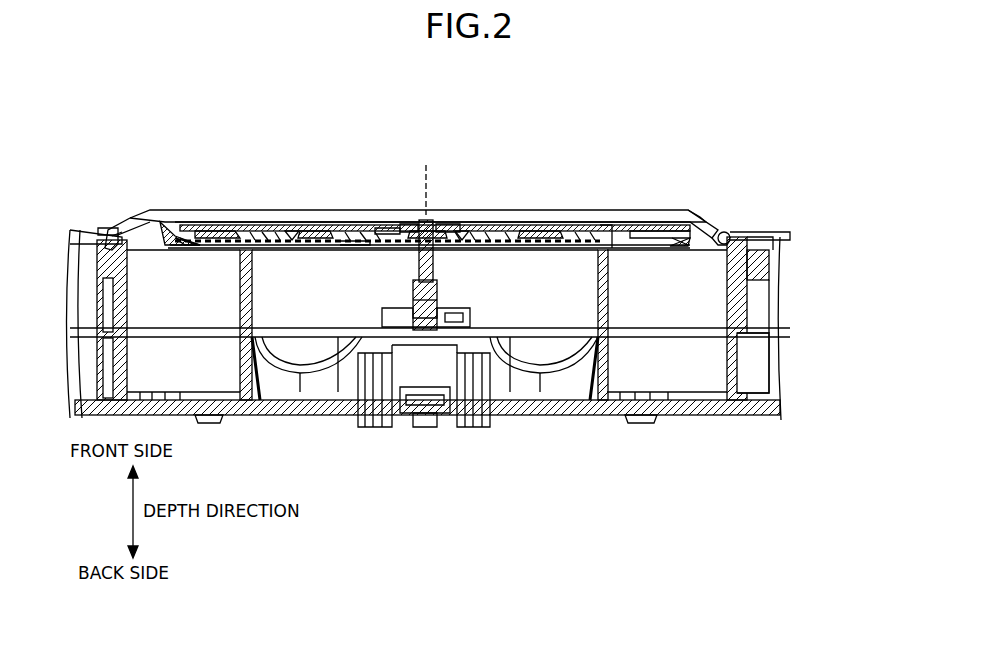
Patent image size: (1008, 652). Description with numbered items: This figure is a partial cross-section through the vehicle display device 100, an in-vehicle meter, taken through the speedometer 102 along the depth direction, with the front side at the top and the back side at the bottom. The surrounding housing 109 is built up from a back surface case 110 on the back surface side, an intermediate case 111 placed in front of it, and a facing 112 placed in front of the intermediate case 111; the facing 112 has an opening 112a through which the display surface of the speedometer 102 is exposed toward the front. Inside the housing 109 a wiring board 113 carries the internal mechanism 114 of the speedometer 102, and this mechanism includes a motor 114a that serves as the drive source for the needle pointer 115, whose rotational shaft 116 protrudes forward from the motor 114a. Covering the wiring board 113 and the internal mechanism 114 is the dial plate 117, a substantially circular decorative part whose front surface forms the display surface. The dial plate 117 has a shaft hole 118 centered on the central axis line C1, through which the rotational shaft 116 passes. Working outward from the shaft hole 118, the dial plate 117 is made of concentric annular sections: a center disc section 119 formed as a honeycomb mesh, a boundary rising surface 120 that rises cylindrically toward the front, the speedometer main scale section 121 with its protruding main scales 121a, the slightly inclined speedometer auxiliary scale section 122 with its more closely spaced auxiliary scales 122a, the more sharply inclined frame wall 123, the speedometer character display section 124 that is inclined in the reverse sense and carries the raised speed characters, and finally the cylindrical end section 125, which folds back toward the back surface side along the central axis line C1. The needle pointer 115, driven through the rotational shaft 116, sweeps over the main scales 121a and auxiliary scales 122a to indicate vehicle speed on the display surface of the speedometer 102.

The vehicle display device 100 is at (186, 190).
The speedometer 102 is at (530, 210).
The housing 109 is at (843, 215).
The back surface case 110 is at (768, 360).
The intermediate case 111 is at (766, 275).
The facing 112 is at (770, 238).
The opening 112a is at (736, 233).
The wiring board 113 is at (614, 410).
The internal mechanism 114 is at (458, 415).
The motor 114a is at (410, 405).
The needle pointer 115 is at (232, 225).
The rotational shaft 116 is at (436, 262).
The dial plate 117 is at (706, 213).
The shaft hole 118 is at (403, 220).
The center disc section 119 is at (353, 220).
The boundary rising surface 120 is at (381, 215).
The speedometer main scale section 121 is at (603, 225).
The main scale 121a is at (640, 225).
The speedometer auxiliary scale section 122 is at (570, 222).
The auxiliary scale 122a is at (336, 215).
The frame wall 123 is at (608, 225).
The speedometer character display section 124 is at (720, 228).
The cylindrical end section 125 is at (100, 225).
The central axis line C1 is at (427, 176).